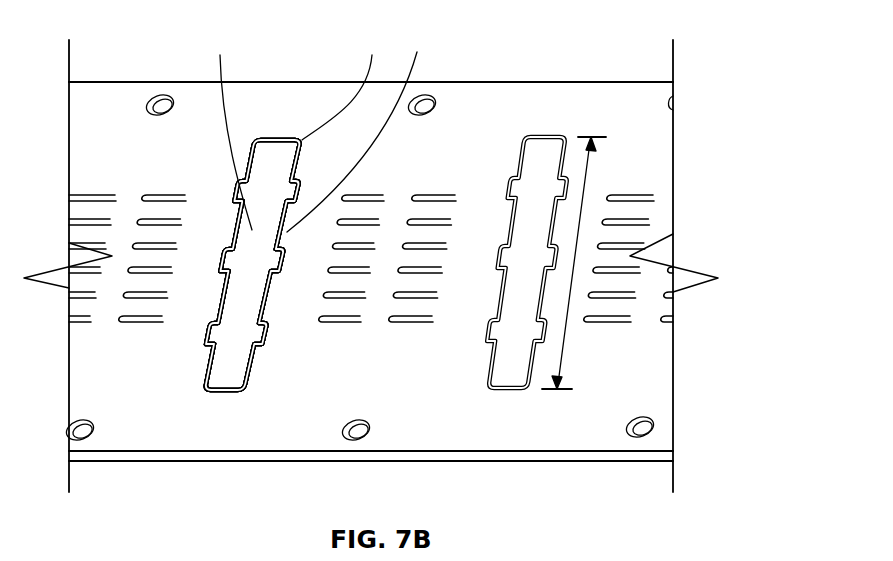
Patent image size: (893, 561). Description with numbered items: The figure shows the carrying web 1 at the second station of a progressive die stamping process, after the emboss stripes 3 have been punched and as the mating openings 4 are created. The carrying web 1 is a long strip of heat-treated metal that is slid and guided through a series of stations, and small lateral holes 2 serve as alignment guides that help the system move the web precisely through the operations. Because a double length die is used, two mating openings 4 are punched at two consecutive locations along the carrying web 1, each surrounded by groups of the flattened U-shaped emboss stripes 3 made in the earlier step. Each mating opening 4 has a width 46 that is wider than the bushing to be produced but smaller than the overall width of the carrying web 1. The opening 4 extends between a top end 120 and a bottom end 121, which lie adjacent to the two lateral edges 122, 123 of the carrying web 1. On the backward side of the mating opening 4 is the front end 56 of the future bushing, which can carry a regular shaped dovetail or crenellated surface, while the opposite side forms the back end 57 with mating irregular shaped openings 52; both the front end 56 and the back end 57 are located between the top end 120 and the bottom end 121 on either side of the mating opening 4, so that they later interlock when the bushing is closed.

The carrying web 1 is at (312, 82).
The holes 2 is at (426, 102).
The emboss stripes 3 is at (437, 197).
The mating opening 4 is at (278, 157).
The width of the mating opening 46 is at (578, 236).
The irregular shaped openings 52 is at (284, 263).
The front end 56 is at (287, 232).
The back end 57 is at (252, 230).
The top end 120 is at (302, 140).
The bottom end 121 is at (246, 388).
The lateral edge 122 is at (161, 438).
The lateral edge 123 is at (138, 92).